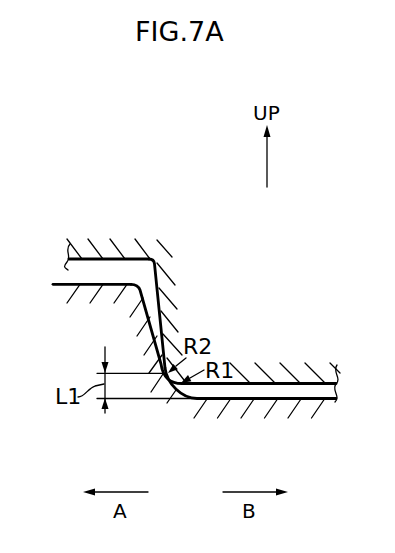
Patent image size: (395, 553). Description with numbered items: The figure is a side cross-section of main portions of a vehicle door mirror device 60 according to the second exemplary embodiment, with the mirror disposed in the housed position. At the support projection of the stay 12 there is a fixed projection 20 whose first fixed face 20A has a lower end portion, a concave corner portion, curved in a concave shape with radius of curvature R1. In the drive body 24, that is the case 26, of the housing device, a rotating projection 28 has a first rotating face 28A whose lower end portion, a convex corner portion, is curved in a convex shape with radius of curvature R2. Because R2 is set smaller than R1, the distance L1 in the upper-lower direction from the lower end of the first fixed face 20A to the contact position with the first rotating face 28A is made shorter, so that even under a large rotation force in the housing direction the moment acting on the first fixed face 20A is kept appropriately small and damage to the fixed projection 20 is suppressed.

The vehicle door mirror device 60 is at (122, 139).
The fixed projection 20 is at (53, 290).
The first fixed face 20A is at (158, 298).
The case 26 is at (84, 266).
The drive body 24 is at (79, 329).
The first rotating face 28A is at (153, 329).
The rotating projection 28 is at (270, 378).
The stay 12 is at (296, 372).